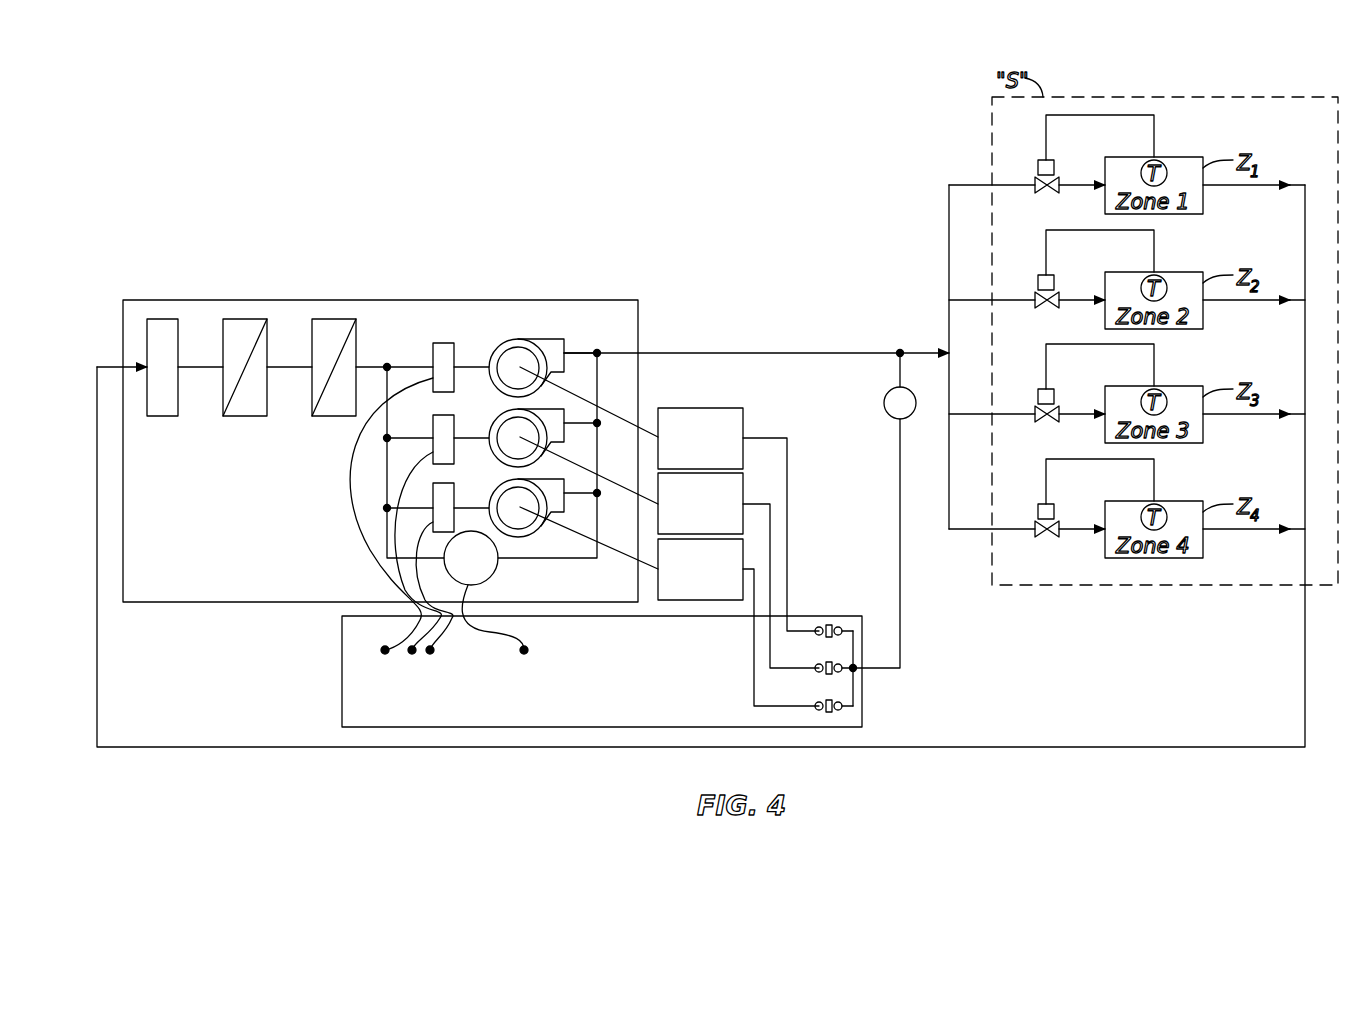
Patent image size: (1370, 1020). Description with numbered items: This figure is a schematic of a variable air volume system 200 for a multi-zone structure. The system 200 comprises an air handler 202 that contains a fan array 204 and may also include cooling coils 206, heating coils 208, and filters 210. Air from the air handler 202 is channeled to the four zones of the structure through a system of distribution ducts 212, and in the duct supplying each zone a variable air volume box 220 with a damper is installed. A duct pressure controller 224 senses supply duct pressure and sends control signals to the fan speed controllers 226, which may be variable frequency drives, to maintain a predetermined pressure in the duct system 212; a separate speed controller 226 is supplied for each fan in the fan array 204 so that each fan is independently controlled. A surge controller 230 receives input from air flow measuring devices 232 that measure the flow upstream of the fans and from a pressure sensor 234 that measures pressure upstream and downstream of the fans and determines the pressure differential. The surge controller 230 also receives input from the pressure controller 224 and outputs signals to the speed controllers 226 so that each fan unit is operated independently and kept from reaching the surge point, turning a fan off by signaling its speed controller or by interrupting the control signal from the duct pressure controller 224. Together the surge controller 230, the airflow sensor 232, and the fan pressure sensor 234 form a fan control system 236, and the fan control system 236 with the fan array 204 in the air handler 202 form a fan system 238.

The variable air volume system 200 is at (777, 202).
The air handler 202 is at (196, 602).
The fan array 204 is at (548, 339).
The cooling coils 206 is at (332, 319).
The heating coils 208 is at (245, 319).
The filters 210 is at (162, 319).
The distribution ducts 212 is at (765, 353).
The variable air volume box 220 is at (1038, 167).
The duct pressure controller 224 is at (884, 400).
The fan speed controllers 226 is at (700, 408).
The surge controller 230 is at (342, 690).
The air flow measuring devices 232 is at (440, 343).
The pressure sensor 234 is at (498, 566).
The fan control system 236 is at (866, 695).
The fan system 238 is at (517, 336).